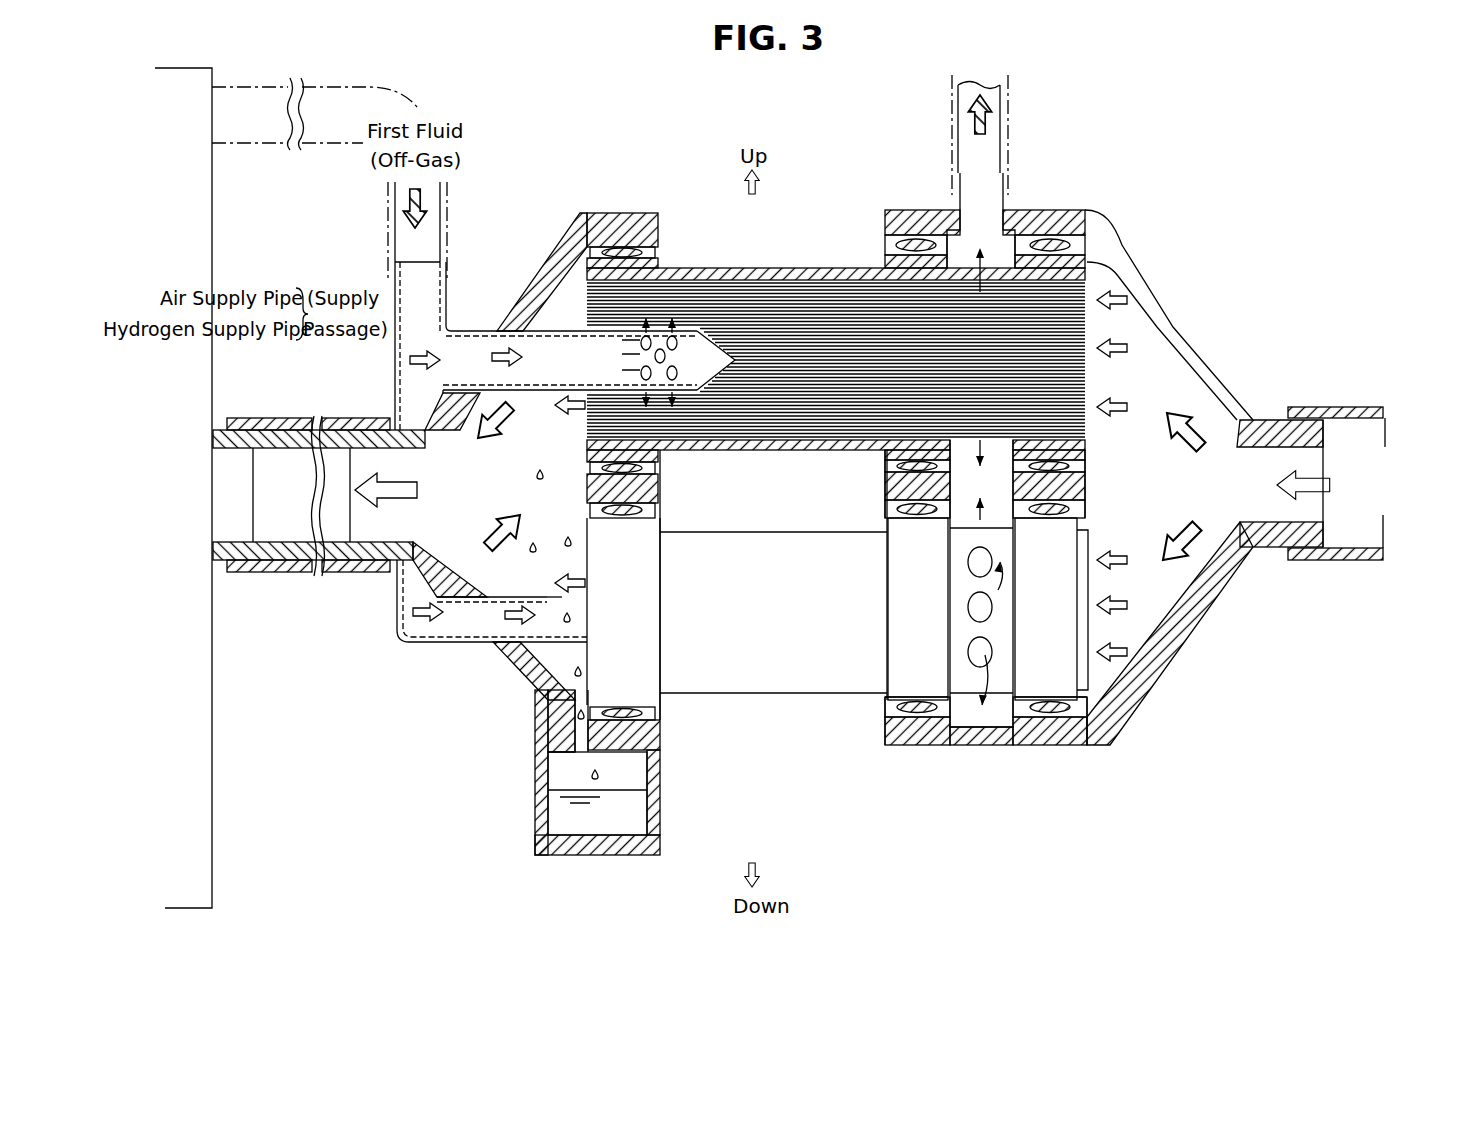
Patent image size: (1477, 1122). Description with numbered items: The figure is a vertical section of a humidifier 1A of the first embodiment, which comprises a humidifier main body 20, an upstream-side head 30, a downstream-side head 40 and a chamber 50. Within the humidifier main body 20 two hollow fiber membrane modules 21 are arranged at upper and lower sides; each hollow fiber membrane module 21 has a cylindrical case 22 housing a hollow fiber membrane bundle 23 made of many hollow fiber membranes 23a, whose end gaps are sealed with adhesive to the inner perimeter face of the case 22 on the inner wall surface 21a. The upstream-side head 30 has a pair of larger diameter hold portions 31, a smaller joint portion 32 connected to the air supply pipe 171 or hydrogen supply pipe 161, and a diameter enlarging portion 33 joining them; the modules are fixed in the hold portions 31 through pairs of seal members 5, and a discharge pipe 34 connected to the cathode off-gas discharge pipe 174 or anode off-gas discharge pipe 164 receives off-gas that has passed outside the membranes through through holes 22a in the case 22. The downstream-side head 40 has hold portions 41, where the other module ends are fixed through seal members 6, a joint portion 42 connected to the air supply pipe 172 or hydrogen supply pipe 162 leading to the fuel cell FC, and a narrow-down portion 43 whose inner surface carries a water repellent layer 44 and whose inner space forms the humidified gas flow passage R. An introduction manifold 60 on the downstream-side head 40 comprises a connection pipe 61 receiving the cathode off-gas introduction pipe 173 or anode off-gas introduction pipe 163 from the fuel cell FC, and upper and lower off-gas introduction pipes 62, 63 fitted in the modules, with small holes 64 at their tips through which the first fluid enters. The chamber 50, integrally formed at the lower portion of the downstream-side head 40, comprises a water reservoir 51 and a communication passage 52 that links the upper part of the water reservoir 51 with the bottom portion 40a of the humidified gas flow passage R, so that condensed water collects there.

The humidifier 1A is at (1140, 167).
The seal member 5 is at (912, 240).
The seal member 6 is at (640, 217).
The humidifier main body 20 is at (745, 713).
The hollow fiber membrane module 21 is at (792, 265).
The inner wall surface of casing 21a is at (583, 542).
The case 22 is at (718, 545).
The through hole 22a is at (988, 657).
The hollow fiber membrane bundle 23 is at (1090, 282).
The hollow fiber membrane 23a is at (1088, 318).
The upstream-side head 30 is at (1180, 307).
The hold portion 31 is at (890, 223).
The joint portion 32 is at (1270, 550).
The diameter enlarging portion 33 is at (1197, 607).
The discharge pipe 34 is at (1005, 185).
The downstream-side head 40 is at (543, 262).
The bottom portion 40a is at (548, 717).
The hold portion 41 is at (655, 228).
The joint portion 42 is at (365, 430).
The narrow-down portion 43 is at (520, 303).
The water repellent layer 44 is at (550, 596).
The chamber 50 is at (529, 797).
The water reservoir 51 is at (647, 815).
The communication passage 52 is at (548, 755).
The introduction manifold 60 is at (393, 590).
The connection pipe 61 is at (395, 293).
The off-gas introduction pipe 62 is at (473, 327).
The off-gas introduction pipe 63 is at (463, 642).
The small hole 64 is at (683, 345).
The humidified gas flow passage R is at (413, 634).
The fuel cell FC is at (228, 875).
The air supply pipe 171 is at (1342, 451).
The hydrogen supply pipe 161 is at (1317, 407).
The air supply pipe 172 is at (308, 461).
The hydrogen supply pipe 162 is at (287, 418).
The cathode off-gas introduction pipe 173 is at (329, 180).
The anode off-gas introduction pipe 163 is at (388, 197).
The cathode off-gas discharge pipe 174 is at (897, 135).
The anode off-gas discharge pipe 164 is at (950, 115).